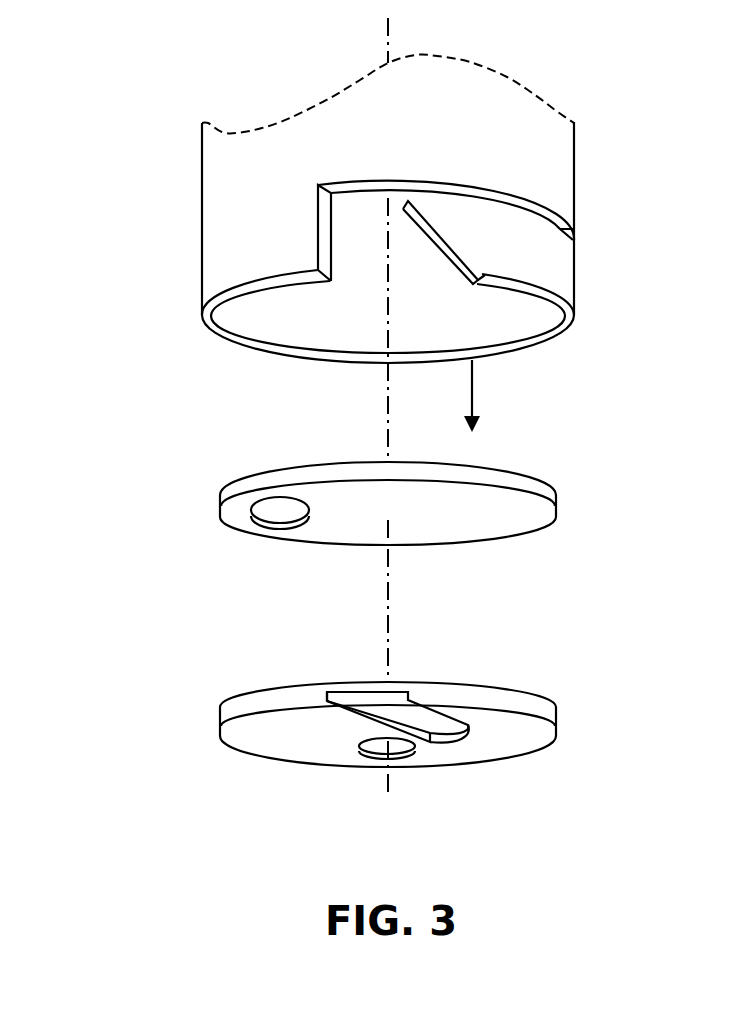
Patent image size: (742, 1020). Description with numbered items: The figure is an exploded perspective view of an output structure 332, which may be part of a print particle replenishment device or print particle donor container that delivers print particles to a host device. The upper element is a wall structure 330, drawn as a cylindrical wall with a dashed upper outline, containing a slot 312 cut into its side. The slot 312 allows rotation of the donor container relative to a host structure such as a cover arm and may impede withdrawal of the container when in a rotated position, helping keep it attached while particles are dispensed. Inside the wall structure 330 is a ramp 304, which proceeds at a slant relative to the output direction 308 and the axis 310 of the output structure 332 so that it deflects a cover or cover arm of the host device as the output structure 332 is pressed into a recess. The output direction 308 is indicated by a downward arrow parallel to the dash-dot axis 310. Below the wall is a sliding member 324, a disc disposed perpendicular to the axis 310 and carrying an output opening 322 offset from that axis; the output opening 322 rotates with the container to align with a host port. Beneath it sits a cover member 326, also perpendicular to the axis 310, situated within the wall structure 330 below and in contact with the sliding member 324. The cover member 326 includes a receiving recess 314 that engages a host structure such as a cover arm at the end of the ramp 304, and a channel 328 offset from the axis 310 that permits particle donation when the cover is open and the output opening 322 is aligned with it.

The output structure 332 is at (165, 70).
The wall structure 330 is at (574, 183).
The slot 312 is at (502, 170).
The ramp 304 is at (450, 243).
The axis 310 is at (388, 403).
The output direction 308 is at (473, 390).
The sliding member 324 is at (222, 507).
The output opening 322 is at (262, 524).
The cover member 326 is at (221, 726).
The receiving recess 314 is at (450, 711).
The channel 328 is at (360, 754).